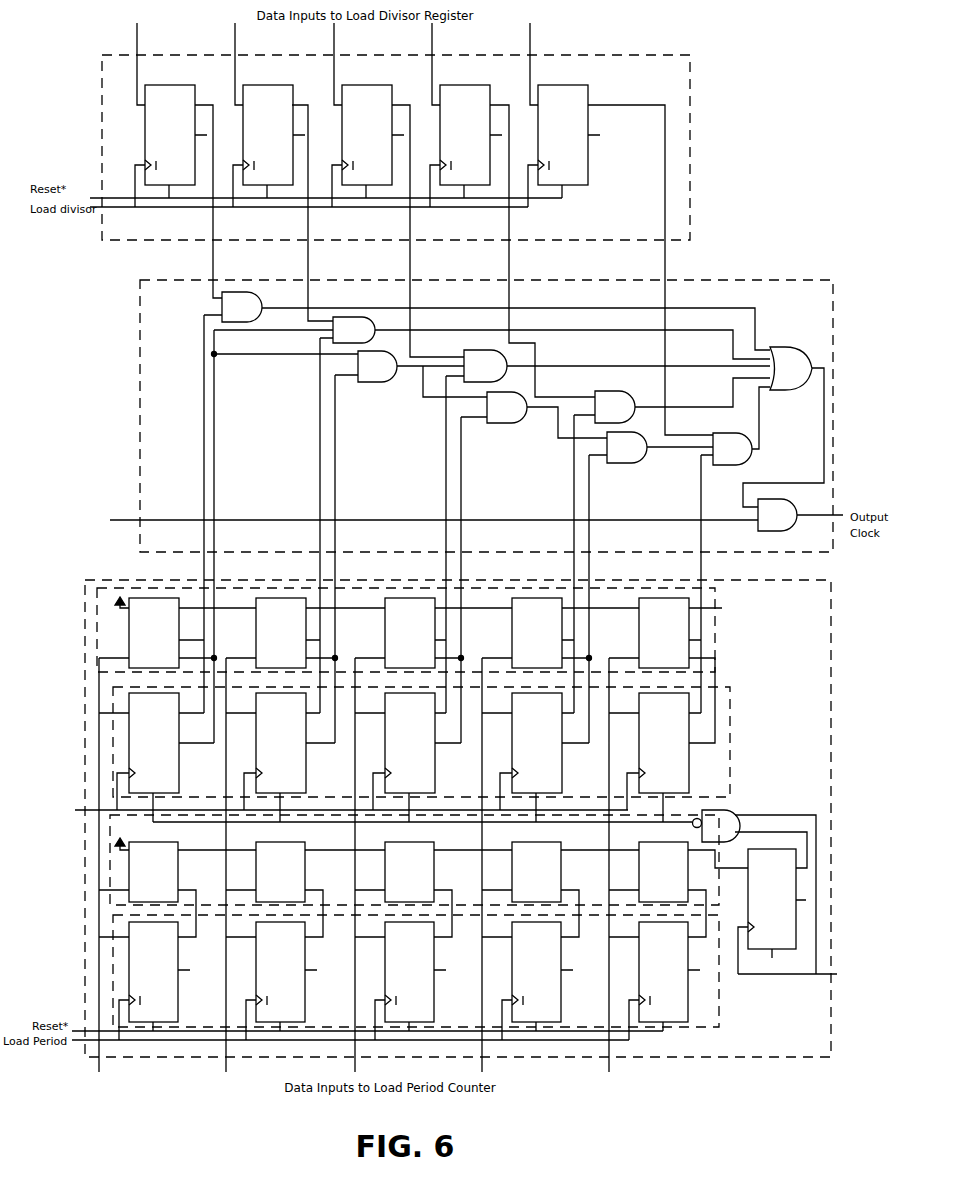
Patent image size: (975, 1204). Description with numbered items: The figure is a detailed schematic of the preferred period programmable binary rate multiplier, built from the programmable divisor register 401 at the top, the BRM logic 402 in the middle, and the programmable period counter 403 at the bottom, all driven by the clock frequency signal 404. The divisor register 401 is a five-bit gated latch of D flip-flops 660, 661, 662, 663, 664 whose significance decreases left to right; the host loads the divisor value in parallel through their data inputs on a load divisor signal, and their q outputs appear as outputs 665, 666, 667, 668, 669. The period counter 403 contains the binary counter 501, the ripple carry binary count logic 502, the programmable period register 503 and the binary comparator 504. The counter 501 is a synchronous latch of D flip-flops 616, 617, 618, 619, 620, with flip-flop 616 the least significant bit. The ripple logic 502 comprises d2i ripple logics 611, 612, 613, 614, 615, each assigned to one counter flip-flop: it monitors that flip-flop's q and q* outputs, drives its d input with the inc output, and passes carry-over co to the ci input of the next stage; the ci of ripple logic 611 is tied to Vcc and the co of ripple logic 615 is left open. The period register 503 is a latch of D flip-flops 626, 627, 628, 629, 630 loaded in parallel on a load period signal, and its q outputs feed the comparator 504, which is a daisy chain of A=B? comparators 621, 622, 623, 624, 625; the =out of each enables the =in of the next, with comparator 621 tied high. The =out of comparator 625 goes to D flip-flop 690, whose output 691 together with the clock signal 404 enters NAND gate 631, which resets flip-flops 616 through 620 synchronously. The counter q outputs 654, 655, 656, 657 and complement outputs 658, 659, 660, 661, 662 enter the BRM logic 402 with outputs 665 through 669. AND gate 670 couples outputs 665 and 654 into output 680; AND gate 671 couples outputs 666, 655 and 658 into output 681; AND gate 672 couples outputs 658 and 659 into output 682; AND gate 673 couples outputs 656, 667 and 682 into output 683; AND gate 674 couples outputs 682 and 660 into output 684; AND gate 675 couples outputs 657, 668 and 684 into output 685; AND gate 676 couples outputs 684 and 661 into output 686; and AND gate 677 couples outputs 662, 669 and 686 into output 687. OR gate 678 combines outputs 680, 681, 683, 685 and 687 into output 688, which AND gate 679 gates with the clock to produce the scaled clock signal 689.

The programmable divisor register 401 is at (397, 147).
The BRM logic 402 is at (486, 416).
The programmable period counter 403 is at (458, 818).
The clock frequency signal 404 is at (452, 753).
The binary counter 501 is at (732, 747).
The ripple carry binary count logic 502 is at (97, 588).
The programmable period register 503 is at (722, 1003).
The binary comparator 504 is at (107, 868).
The d2i ripple logic 611 is at (154, 626).
The d2i ripple logic 612 is at (281, 626).
The d2i ripple logic 613 is at (410, 626).
The d2i ripple logic 614 is at (537, 626).
The d2i ripple logic 615 is at (664, 626).
The D flip-flop 616 is at (148, 757).
The D flip-flop 617 is at (275, 757).
The D flip-flop 618 is at (404, 757).
The D flip-flop 619 is at (531, 757).
The D flip-flop 620 is at (658, 757).
The A=B? comparator 621 is at (153, 865).
The A=B? comparator 622 is at (280, 865).
The A=B? comparator 623 is at (409, 865).
The A=B? comparator 624 is at (536, 865).
The A=B? comparator 625 is at (663, 865).
The D flip-flop 626 is at (154, 981).
The D flip-flop 627 is at (281, 981).
The D flip-flop 628 is at (410, 981).
The D flip-flop 629 is at (537, 981).
The D flip-flop 630 is at (664, 981).
The NAND gate 631 is at (755, 892).
The output 654 is at (198, 514).
The output 655 is at (312, 525).
The output 656 is at (442, 544).
The output 657 is at (570, 564).
The output 658 is at (268, 536).
The output 659 is at (335, 559).
The D flip-flop 660 is at (312, 383).
The D flip-flop 661 is at (425, 383).
The D flip-flop 662 is at (522, 368).
The D flip-flop 663 is at (466, 115).
The D flip-flop 664 is at (564, 115).
The output 665 is at (220, 201).
The output 666 is at (318, 213).
The output 667 is at (428, 231).
The output 668 is at (542, 251).
The output 669 is at (650, 270).
The AND gate 670 is at (242, 307).
The AND gate 671 is at (354, 330).
The AND gate 672 is at (377, 366).
The AND gate 673 is at (485, 366).
The AND gate 674 is at (507, 407).
The AND gate 675 is at (615, 407).
The AND gate 676 is at (627, 447).
The AND gate 677 is at (732, 449).
The OR gate 678 is at (791, 368).
The AND gate 679 is at (777, 515).
The output 680 is at (516, 320).
The output 681 is at (572, 337).
The output 682 is at (442, 381).
The output 683 is at (638, 358).
The output 684 is at (567, 422).
The output 685 is at (702, 392).
The output 686 is at (680, 456).
The output 687 is at (771, 418).
The output 688 is at (783, 437).
The scaled clock signal 689 is at (820, 508).
The D flip-flop 690 is at (772, 911).
The output 691 is at (771, 845).